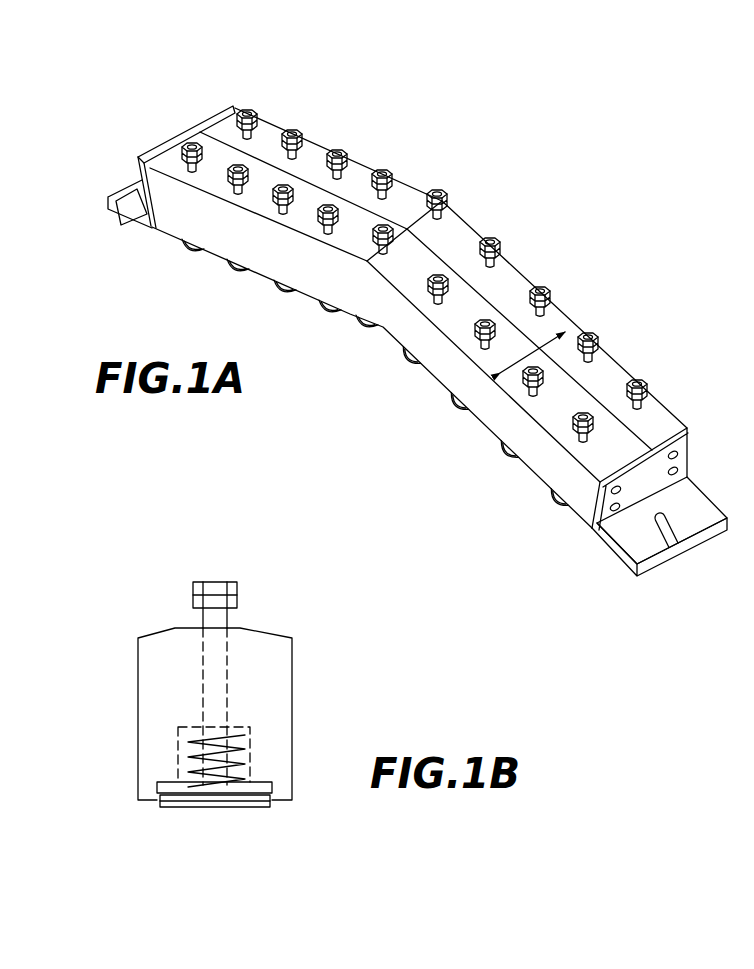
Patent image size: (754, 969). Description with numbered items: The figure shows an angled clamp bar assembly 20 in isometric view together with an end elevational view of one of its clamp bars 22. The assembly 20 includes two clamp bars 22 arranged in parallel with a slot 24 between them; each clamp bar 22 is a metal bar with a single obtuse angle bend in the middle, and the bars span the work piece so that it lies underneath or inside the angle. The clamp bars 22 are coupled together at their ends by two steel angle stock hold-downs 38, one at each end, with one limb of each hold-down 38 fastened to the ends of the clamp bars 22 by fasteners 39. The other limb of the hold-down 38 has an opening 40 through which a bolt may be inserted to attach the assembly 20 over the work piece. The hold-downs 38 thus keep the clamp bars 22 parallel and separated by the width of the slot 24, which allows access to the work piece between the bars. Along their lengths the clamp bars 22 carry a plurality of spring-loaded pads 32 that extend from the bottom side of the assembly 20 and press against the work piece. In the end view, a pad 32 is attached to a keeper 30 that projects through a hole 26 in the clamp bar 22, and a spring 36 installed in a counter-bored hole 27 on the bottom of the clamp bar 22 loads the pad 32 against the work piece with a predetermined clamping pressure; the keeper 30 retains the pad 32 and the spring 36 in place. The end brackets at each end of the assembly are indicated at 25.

In FIG. 1A, the angled clamp bar assembly 20 is at (334, 406).
In FIG. 1A, the clamp bar 22 is at (659, 418).
In FIG. 1B, the clamp bar 22 is at (283, 662).
In FIG. 1A, the slot 24 is at (548, 335).
In FIG. 1A, the end bracket 25 is at (418, 319).
In FIG. 1B, the hole 26 is at (200, 669).
In FIG. 1B, the counter-bored hole 27 is at (178, 752).
In FIG. 1A, the keeper 30 is at (251, 102).
In FIG. 1B, the keeper 30 is at (238, 577).
In FIG. 1A, the spring-loaded pad 32 is at (186, 250).
In FIG. 1B, the spring-loaded pad 32 is at (282, 812).
In FIG. 1B, the spring 36 is at (250, 760).
In FIG. 1A, the hold-down 38 is at (204, 116).
In FIG. 1A, the fastener 39 is at (680, 455).
In FIG. 1A, the opening 40 is at (680, 549).